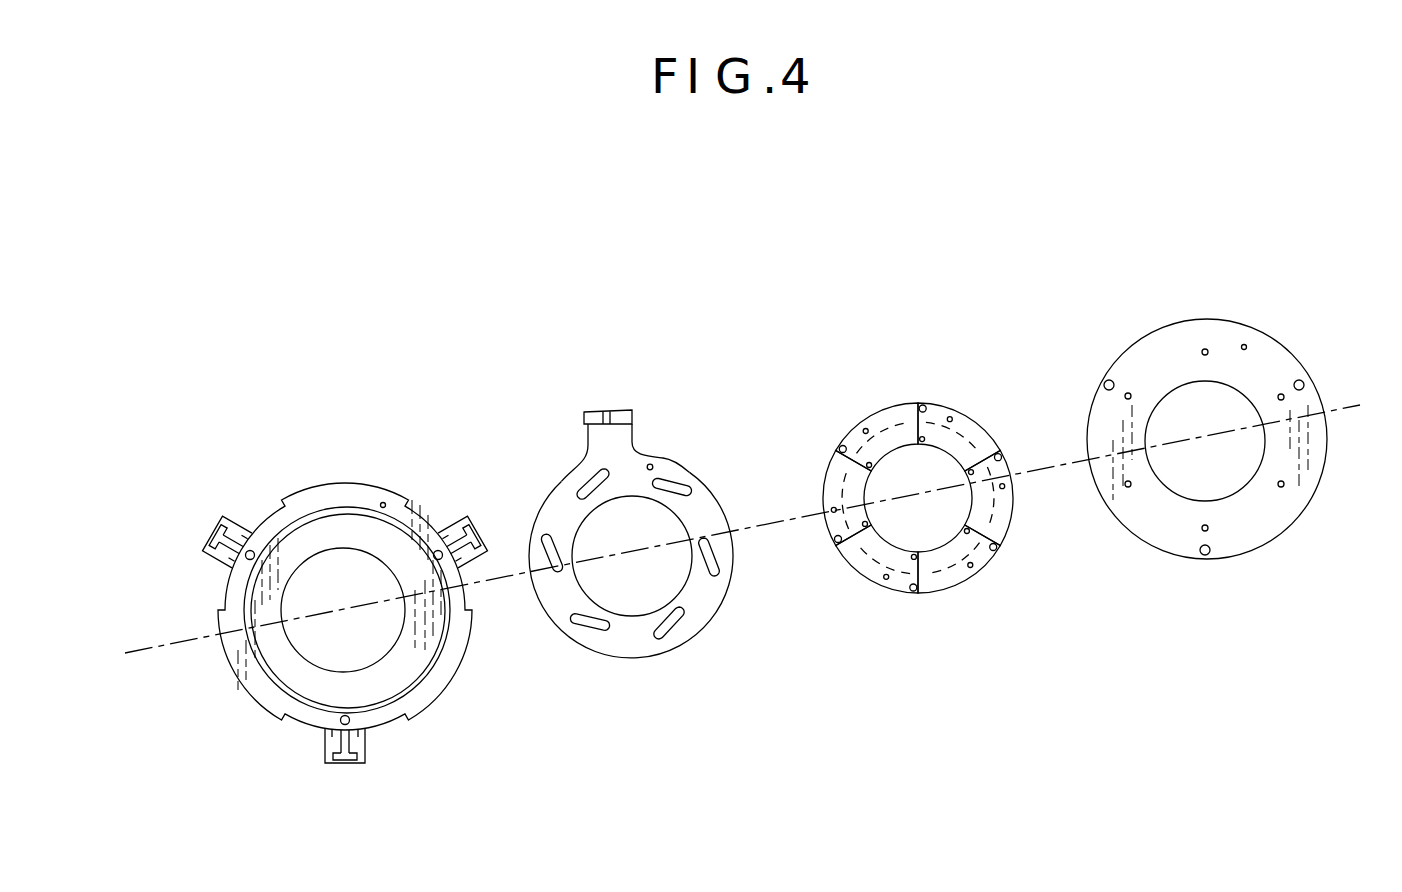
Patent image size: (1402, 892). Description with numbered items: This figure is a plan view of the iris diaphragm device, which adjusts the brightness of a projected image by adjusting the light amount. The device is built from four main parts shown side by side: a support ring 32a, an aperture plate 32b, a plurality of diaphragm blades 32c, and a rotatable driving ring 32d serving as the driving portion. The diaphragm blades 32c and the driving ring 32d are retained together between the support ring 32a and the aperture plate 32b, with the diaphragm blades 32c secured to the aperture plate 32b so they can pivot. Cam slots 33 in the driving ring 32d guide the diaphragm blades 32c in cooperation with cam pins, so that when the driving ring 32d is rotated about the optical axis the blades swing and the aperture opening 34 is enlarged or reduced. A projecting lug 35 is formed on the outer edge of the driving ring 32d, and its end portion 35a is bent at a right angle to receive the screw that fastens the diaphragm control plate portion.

The support ring 32a is at (337, 478).
The aperture plate 32b is at (1185, 312).
The diaphragm blades 32c is at (918, 477).
The rotatable driving ring 32d is at (614, 530).
The cam slots 33 is at (670, 632).
The aperture opening 34 is at (891, 548).
The projecting lug 35 is at (573, 436).
The end portion 35a is at (594, 409).